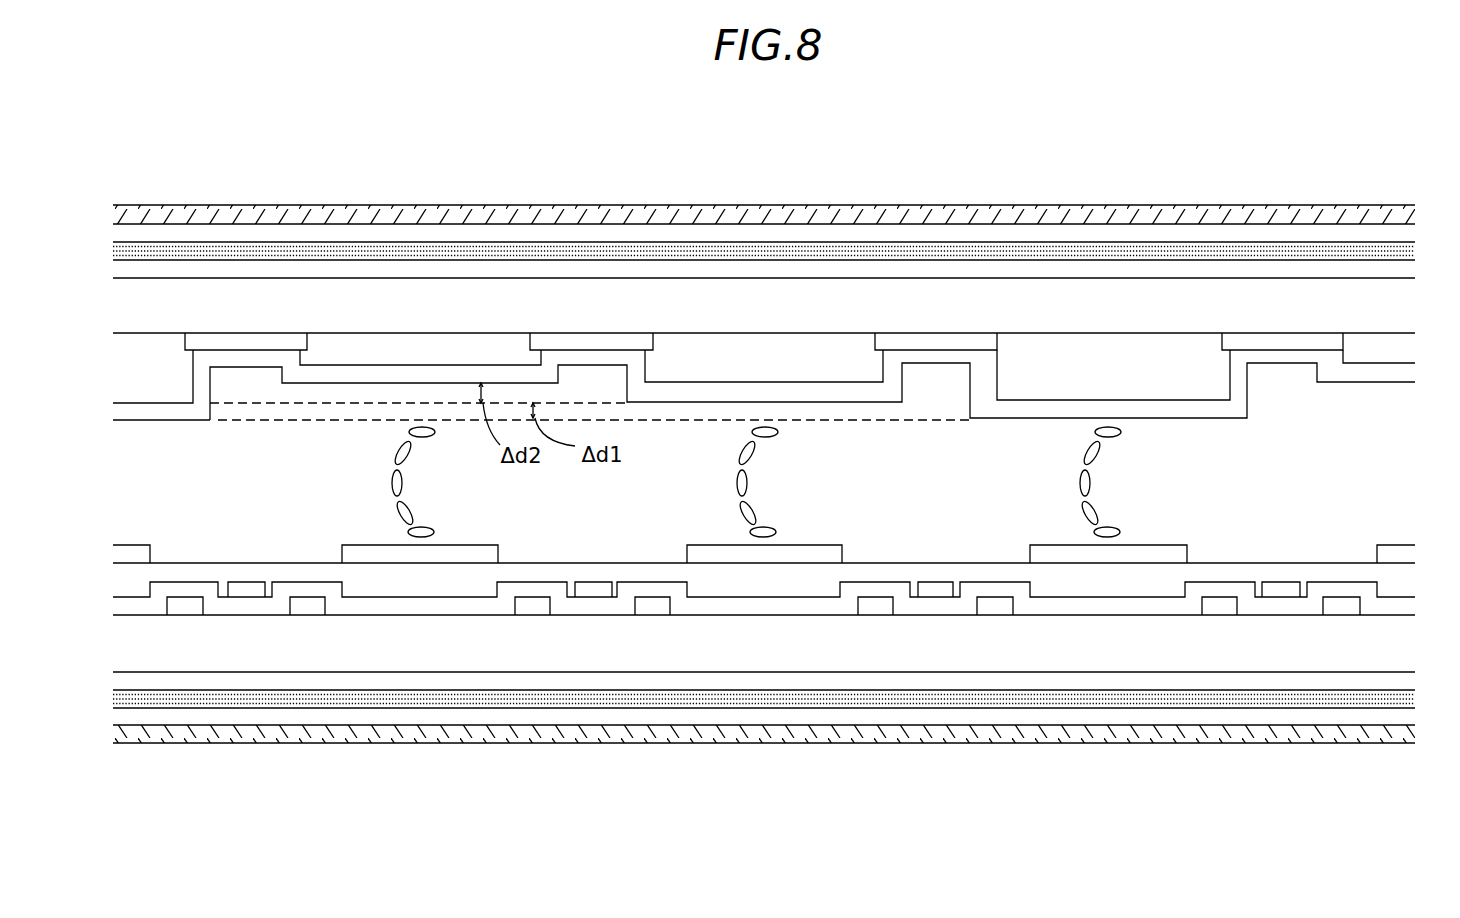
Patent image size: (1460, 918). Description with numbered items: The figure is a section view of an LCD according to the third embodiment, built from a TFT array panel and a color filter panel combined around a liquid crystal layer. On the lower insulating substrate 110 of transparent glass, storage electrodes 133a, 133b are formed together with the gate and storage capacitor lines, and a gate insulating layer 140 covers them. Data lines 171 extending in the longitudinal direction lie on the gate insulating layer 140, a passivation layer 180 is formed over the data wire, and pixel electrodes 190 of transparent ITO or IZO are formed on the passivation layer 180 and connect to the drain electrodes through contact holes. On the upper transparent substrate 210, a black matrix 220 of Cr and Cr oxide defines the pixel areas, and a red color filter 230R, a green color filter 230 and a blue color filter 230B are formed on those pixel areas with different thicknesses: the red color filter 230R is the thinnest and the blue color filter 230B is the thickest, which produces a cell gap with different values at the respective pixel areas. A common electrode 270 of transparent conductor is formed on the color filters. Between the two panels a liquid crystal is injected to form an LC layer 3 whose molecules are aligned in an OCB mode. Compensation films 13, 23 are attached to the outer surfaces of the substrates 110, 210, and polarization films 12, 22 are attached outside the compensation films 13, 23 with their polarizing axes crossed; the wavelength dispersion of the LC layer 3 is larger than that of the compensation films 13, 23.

The LC layer 3 is at (1383, 491).
The polarization film 12 is at (937, 735).
The compensation film 13 is at (475, 700).
The polarization film 22 is at (440, 215).
The compensation film 23 is at (510, 250).
The insulating substrate 110 is at (813, 660).
The storage electrode 133a is at (305, 607).
The storage electrode 133b is at (188, 607).
The gate insulating layer 140 is at (600, 605).
The data line 171 is at (248, 590).
The passivation layer 180 is at (358, 590).
The pixel electrode 190 is at (420, 555).
The transparent substrate 210 is at (825, 295).
The black matrix 220 is at (248, 340).
The color filter 230 is at (738, 340).
The red color filter 230R is at (352, 340).
The blue color filter 230B is at (1140, 340).
The common electrode 270 is at (1032, 405).